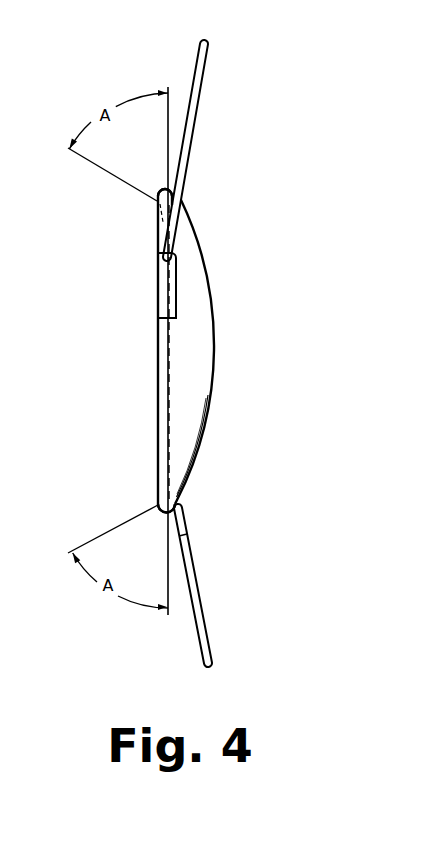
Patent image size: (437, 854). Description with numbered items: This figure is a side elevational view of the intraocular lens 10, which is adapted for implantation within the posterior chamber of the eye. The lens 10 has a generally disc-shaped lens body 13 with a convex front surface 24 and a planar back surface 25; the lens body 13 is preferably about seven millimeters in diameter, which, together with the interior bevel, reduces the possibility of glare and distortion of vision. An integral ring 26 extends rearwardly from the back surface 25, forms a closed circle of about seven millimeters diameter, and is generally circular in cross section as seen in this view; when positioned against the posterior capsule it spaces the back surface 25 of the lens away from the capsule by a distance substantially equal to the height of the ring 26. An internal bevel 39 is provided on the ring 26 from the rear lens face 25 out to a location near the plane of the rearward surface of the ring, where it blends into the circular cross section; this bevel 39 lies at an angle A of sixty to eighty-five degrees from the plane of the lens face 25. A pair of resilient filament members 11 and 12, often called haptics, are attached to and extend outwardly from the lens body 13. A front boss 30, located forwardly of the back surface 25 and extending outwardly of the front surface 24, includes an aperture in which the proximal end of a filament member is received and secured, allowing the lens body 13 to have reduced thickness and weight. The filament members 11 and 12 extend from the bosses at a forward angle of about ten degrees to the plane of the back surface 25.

The intraocular lens 10 is at (293, 380).
The resilient filament member 11 is at (202, 68).
The resilient filament member 12 is at (207, 620).
The lens body 13 is at (193, 352).
The convex front surface 24 is at (200, 460).
The planar back surface 25 is at (167, 465).
The integral ring 26 is at (164, 190).
The front boss 30 is at (163, 288).
The internal bevel 39 is at (157, 217).